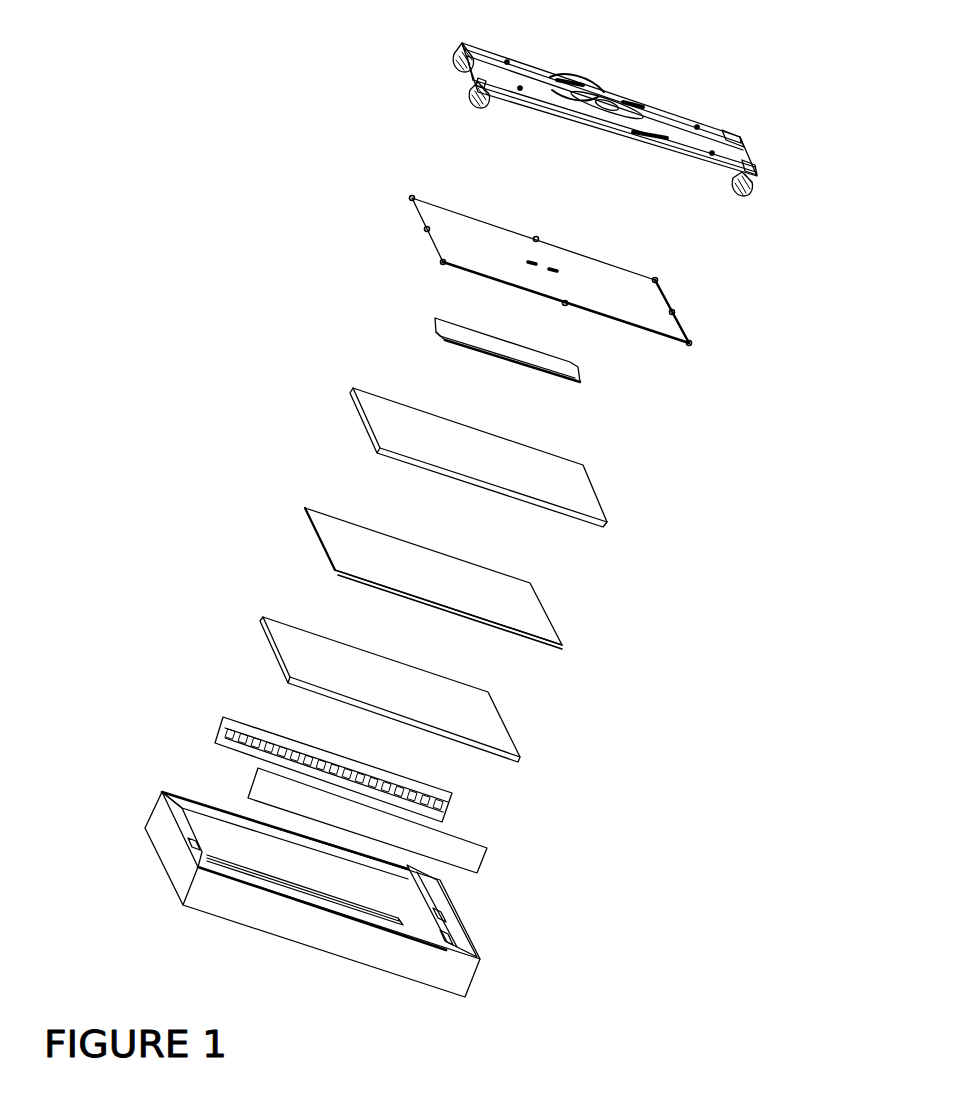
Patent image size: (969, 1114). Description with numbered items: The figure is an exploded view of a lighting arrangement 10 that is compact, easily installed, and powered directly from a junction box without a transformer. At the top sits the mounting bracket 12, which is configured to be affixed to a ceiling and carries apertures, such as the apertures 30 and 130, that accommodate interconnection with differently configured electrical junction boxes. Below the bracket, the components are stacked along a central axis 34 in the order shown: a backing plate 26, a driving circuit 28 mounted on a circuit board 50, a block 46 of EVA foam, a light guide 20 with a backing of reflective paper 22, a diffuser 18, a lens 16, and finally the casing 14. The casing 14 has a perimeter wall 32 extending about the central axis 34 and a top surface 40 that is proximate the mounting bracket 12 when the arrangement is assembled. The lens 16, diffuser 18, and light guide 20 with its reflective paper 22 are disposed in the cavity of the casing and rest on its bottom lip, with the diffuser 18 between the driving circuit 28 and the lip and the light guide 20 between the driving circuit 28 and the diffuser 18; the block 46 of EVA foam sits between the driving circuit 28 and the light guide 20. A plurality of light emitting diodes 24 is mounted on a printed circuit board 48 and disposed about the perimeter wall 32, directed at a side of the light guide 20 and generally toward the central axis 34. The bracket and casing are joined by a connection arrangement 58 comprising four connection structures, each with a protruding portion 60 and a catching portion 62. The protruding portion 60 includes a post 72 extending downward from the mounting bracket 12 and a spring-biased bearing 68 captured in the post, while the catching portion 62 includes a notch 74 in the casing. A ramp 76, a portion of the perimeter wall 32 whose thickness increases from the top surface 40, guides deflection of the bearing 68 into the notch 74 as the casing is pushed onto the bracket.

The lighting arrangement 10 is at (205, 330).
The mounting bracket 12 is at (378, 72).
The casing 14 is at (591, 984).
The lens 16 is at (580, 731).
The diffuser 18 is at (645, 632).
The light guide 20 is at (657, 513).
The backing of reflective paper 22 is at (530, 472).
The plurality of light emitting diodes 24 is at (535, 850).
The backing plate 26 is at (715, 273).
The driving circuit 28 is at (628, 384).
The aperture 30 is at (565, 79).
The perimeter wall 32 is at (158, 827).
The central axis 34 is at (247, 1024).
The top surface 40 is at (163, 792).
The block of EVA foam 46 is at (478, 350).
The printed circuit board 48 is at (230, 727).
The circuit board 50 is at (450, 328).
The connection arrangement 58 is at (447, 107).
The protruding portion 60 is at (392, 113).
The catching portion 62 is at (425, 888).
The bearing 68 is at (458, 58).
The post 72 is at (487, 100).
The notch 74 is at (452, 950).
The ramp 76 is at (458, 932).
The aperture 130 is at (658, 118).